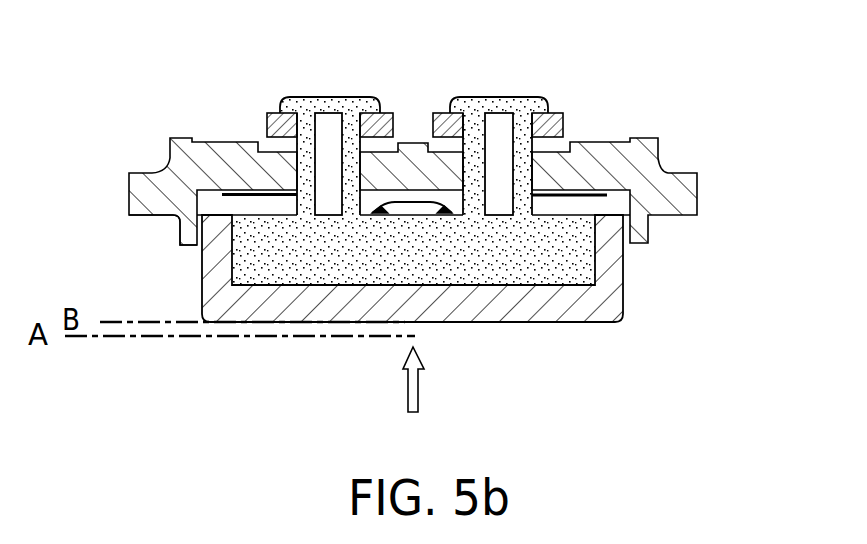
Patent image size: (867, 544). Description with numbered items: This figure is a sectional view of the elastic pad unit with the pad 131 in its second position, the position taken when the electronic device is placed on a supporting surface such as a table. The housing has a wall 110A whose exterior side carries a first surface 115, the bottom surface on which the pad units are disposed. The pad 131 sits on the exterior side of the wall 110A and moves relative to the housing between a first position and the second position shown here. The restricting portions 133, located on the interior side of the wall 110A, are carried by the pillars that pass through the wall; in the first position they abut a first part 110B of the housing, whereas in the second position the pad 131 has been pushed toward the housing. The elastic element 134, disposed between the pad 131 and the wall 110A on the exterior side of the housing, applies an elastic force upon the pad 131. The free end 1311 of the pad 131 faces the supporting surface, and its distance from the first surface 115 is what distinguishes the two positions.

The wall 110A is at (640, 206).
The first part 110B is at (270, 146).
The first surface 115 is at (148, 215).
The pad 131 is at (575, 277).
The free end 1311 is at (573, 323).
The restricting portions 133 is at (560, 112).
The elastic element 134 is at (630, 207).